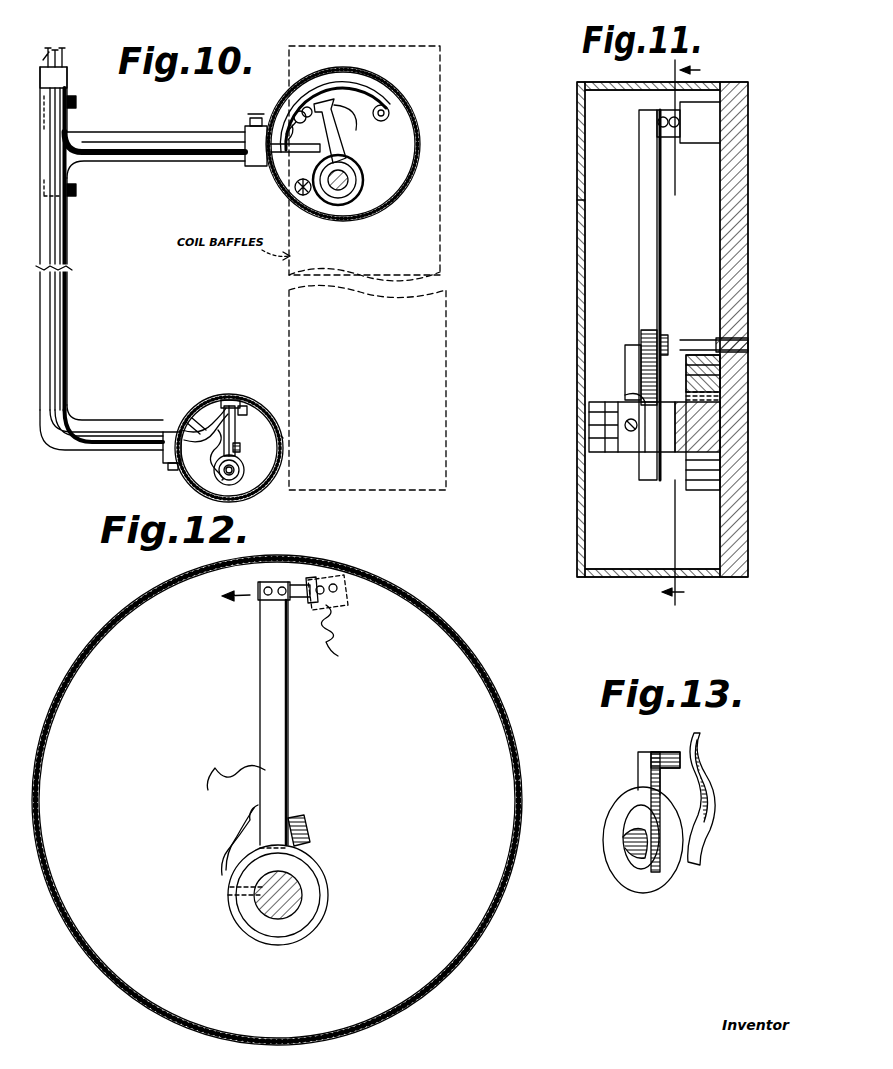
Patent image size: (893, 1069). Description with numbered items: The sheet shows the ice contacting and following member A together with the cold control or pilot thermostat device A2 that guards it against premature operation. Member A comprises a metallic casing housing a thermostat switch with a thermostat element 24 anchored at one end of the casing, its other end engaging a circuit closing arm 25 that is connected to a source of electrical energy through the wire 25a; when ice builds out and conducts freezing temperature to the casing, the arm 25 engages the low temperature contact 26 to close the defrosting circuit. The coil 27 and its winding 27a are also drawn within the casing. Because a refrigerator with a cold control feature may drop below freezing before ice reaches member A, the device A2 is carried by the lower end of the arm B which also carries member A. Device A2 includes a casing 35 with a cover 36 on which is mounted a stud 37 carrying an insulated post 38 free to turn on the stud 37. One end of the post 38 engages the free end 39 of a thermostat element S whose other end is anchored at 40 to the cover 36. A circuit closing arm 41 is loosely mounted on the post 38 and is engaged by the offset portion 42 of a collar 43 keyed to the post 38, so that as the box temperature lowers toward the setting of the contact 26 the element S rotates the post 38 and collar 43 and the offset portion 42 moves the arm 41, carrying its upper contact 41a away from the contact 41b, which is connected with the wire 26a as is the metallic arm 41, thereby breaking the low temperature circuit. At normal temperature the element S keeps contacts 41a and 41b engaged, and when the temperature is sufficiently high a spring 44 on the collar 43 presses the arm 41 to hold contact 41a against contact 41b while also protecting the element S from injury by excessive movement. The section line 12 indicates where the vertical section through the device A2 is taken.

In FIG. 11, the section line 12 is at (696, 341).
In FIG. 10, the thermostat element 24 is at (363, 181).
In FIG. 10, the circuit closing arm 25 is at (338, 104).
In FIG. 10, the wire 25a is at (293, 160).
In FIG. 10, the low temperature contact 26 is at (303, 110).
In FIG. 10, the wire 26a is at (58, 56).
In FIG. 12, the wire 26a is at (340, 656).
In FIG. 10, the coil ring 27 is at (386, 106).
In FIG. 10, the coil wire 27a is at (66, 56).
In FIG. 10, the casing 35 is at (283, 437).
In FIG. 11, the casing 35 is at (580, 292).
In FIG. 12, the casing 35 is at (474, 670).
In FIG. 11, the cover 36 is at (740, 262).
In FIG. 10, the stud 37 is at (240, 478).
In FIG. 11, the stud 37 is at (706, 426).
In FIG. 11, the insulated post 38 is at (690, 447).
In FIG. 12, the insulated post 38 is at (270, 918).
In FIG. 11, the free end 39 is at (712, 406).
In FIG. 11, the anchor 40 is at (740, 346).
In FIG. 10, the circuit closing arm 41 is at (237, 425).
In FIG. 11, the circuit closing arm 41 is at (646, 480).
In FIG. 12, the circuit closing arm 41 is at (288, 712).
In FIG. 10, the contact 41a is at (232, 400).
In FIG. 11, the contact 41a is at (656, 126).
In FIG. 12, the contact 41a is at (300, 583).
In FIG. 10, the contact 41b is at (244, 410).
In FIG. 11, the contact 41b is at (680, 140).
In FIG. 12, the contact 41b is at (322, 586).
In FIG. 10, the offset portion 42 is at (241, 447).
In FIG. 11, the offset portion 42 is at (666, 346).
In FIG. 12, the offset portion 42 is at (296, 818).
In FIG. 13, the offset portion 42 is at (668, 752).
In FIG. 10, the collar 43 is at (245, 466).
In FIG. 11, the collar 43 is at (625, 390).
In FIG. 12, the collar 43 is at (328, 892).
In FIG. 13, the collar 43 is at (620, 862).
In FIG. 10, the spring 44 is at (212, 470).
In FIG. 11, the spring 44 is at (648, 330).
In FIG. 12, the spring 44 is at (248, 830).
In FIG. 13, the spring 44 is at (718, 798).
In FIG. 10, the ice contacting and following member A is at (420, 138).
In FIG. 10, the cold control thermostat device A2 is at (216, 396).
In FIG. 11, the cold control thermostat device A2 is at (578, 210).
In FIG. 12, the cold control thermostat device A2 is at (195, 653).
In FIG. 10, the arm B is at (69, 80).
In FIG. 11, the thermostat element S is at (710, 380).